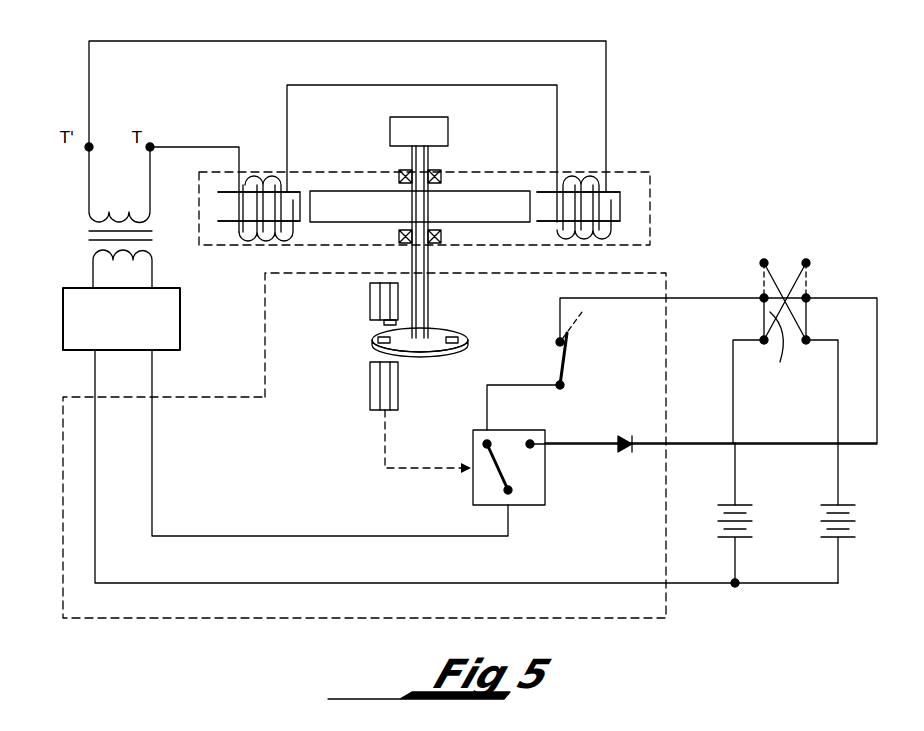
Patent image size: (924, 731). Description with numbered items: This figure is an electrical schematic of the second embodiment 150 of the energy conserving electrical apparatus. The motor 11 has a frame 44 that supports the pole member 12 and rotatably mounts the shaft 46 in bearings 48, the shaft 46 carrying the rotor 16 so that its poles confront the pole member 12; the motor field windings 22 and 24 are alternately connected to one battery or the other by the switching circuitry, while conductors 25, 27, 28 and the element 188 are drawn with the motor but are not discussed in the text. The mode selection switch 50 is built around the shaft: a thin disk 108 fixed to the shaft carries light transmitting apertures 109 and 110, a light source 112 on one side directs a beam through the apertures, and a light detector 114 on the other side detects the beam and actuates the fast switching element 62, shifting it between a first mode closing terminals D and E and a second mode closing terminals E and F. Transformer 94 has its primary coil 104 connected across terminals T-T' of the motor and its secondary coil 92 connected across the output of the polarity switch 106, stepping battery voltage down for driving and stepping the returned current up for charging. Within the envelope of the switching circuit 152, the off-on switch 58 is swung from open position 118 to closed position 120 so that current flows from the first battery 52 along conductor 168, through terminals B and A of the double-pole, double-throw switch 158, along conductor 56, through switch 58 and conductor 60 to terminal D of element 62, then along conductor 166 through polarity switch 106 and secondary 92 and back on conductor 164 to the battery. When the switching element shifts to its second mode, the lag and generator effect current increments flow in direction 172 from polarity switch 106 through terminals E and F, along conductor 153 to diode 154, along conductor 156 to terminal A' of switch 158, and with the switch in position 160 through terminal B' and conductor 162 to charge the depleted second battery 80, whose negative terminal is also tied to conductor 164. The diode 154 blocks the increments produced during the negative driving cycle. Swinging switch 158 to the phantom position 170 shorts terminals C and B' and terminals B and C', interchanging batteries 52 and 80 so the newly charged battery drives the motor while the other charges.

The motor 11 is at (333, 128).
The pole member 12 is at (230, 221).
The rotor 16 is at (420, 206).
The coil winding 22 is at (268, 166).
The coil winding 24 is at (576, 182).
The conductor 25 is at (287, 90).
The conductor 27 is at (210, 147).
The conductor 28 is at (170, 43).
The frame 44 is at (650, 237).
The shaft 46 is at (404, 252).
The bearings 48 is at (441, 176).
The mode selection switch 50 is at (350, 452).
The first battery 52 is at (758, 518).
The conductor 56 is at (560, 298).
The off-on switch 58 is at (585, 330).
The conductor 60 is at (466, 464).
The fast switching element 62 is at (473, 500).
The second battery 80 is at (864, 526).
The secondary coil 92 is at (130, 262).
The transformer 94 is at (88, 218).
The primary coil 104 is at (122, 186).
The polarity switch 106 is at (180, 300).
The disk 108 is at (410, 322).
The light transmitting aperture 109 is at (460, 330).
The light transmitting aperture 110 is at (378, 340).
The light source 112 is at (370, 300).
The light detector 114 is at (370, 385).
The open position 118 is at (592, 344).
The closed position 120 is at (552, 385).
The second embodiment 150 is at (768, 118).
The switching circuit 152 is at (735, 262).
The conductor 153 is at (588, 445).
The diode 154 is at (618, 436).
The conductor 156 is at (770, 440).
The double-pole, double-throw switch 158 is at (822, 292).
The position 160 is at (810, 331).
The conductor 162 is at (838, 462).
The conductor 164 is at (95, 378).
The conductor 166 is at (152, 378).
The conductor 168 is at (733, 462).
The position 170 is at (788, 282).
The direction 172 is at (330, 517).
The motor housing 188 is at (448, 130).